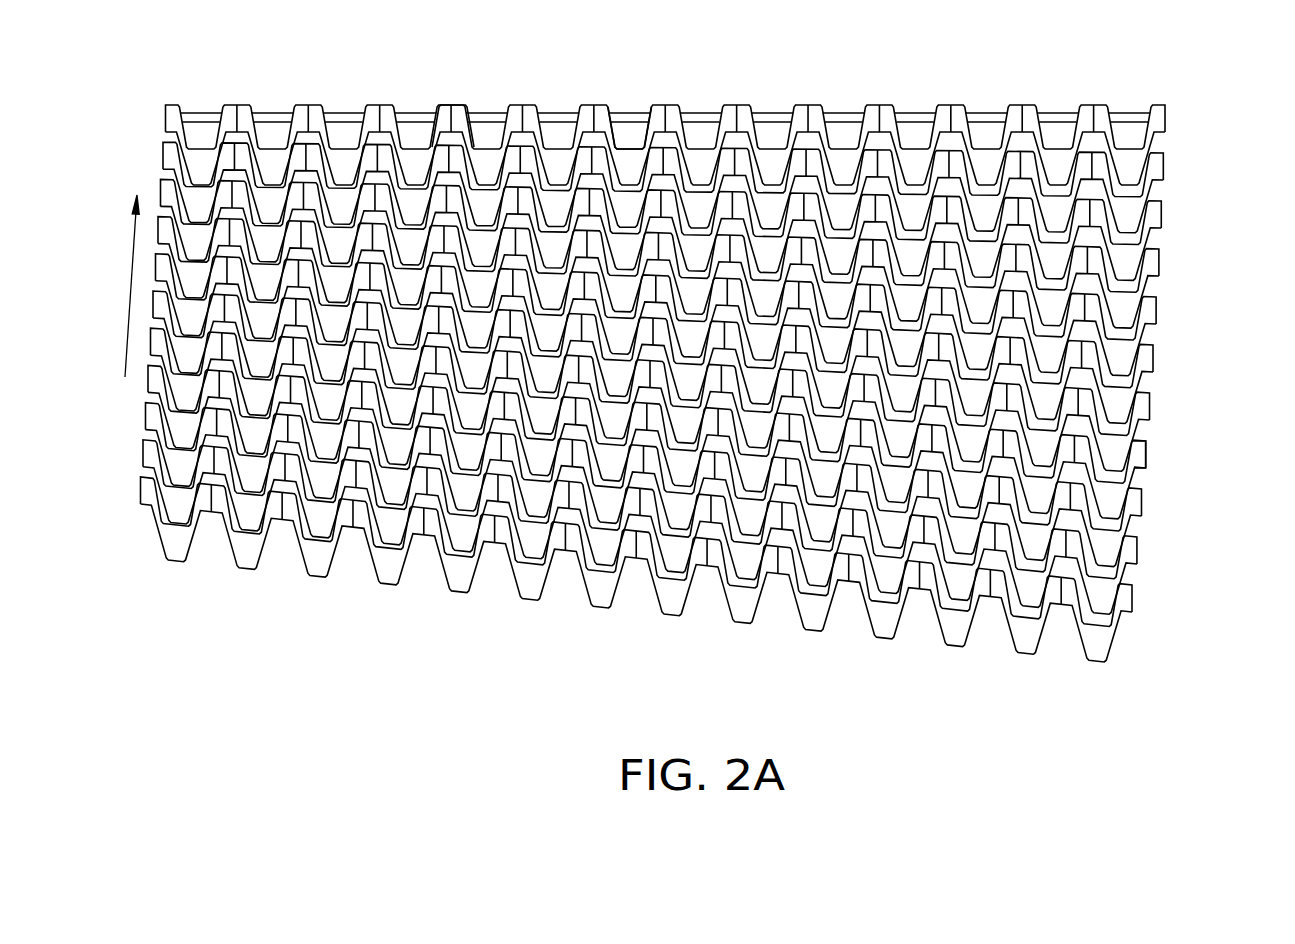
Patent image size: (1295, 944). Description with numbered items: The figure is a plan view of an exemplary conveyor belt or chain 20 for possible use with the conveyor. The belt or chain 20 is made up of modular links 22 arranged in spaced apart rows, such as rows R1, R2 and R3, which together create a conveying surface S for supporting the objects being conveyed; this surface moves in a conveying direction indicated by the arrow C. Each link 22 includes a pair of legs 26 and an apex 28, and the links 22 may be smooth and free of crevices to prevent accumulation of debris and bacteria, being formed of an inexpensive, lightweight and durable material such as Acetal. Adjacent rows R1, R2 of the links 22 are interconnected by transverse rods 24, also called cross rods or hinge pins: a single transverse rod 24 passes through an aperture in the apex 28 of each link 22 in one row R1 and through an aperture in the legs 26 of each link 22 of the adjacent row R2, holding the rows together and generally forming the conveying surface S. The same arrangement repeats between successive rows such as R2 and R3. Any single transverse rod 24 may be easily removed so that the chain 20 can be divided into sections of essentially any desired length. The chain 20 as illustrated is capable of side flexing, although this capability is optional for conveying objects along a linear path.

The belt or chain 20 is at (716, 375).
The modular link 22 is at (775, 165).
The transverse rod 24 is at (917, 114).
The legs 26 is at (451, 103).
The apex 28 is at (623, 140).
The first row R1 is at (729, 109).
The second row R2 is at (727, 133).
The third row R3 is at (1186, 212).
The conveying surface S is at (1115, 453).
The conveying direction C is at (130, 298).